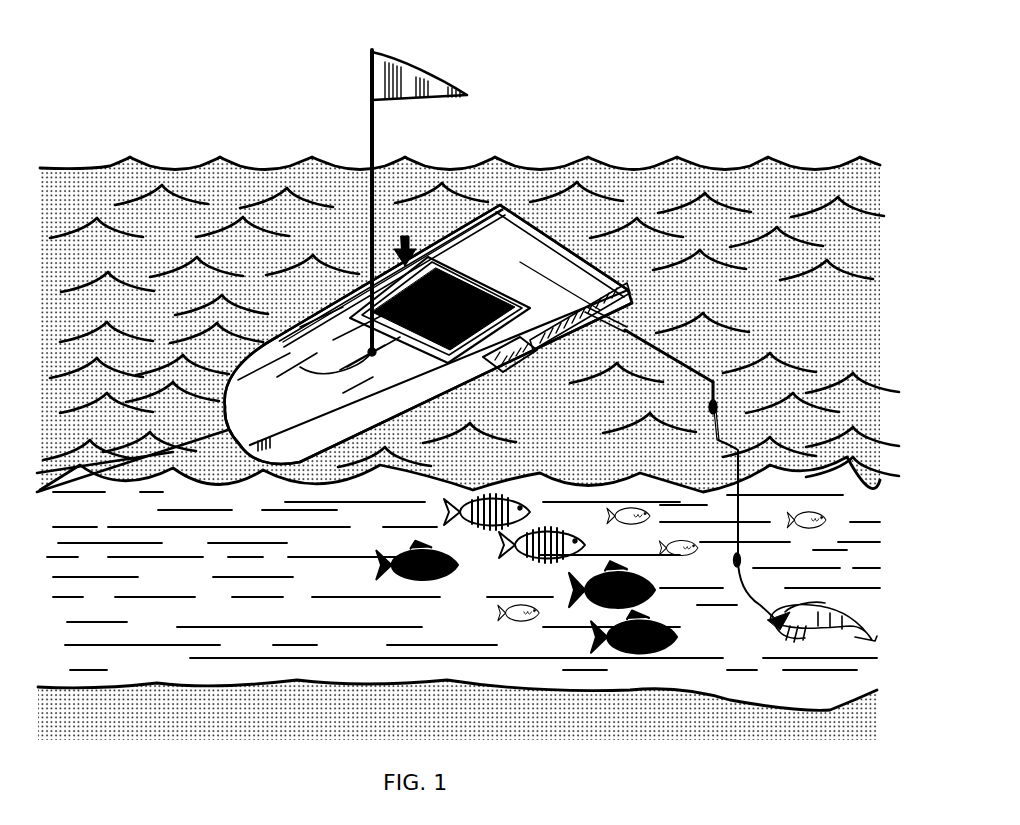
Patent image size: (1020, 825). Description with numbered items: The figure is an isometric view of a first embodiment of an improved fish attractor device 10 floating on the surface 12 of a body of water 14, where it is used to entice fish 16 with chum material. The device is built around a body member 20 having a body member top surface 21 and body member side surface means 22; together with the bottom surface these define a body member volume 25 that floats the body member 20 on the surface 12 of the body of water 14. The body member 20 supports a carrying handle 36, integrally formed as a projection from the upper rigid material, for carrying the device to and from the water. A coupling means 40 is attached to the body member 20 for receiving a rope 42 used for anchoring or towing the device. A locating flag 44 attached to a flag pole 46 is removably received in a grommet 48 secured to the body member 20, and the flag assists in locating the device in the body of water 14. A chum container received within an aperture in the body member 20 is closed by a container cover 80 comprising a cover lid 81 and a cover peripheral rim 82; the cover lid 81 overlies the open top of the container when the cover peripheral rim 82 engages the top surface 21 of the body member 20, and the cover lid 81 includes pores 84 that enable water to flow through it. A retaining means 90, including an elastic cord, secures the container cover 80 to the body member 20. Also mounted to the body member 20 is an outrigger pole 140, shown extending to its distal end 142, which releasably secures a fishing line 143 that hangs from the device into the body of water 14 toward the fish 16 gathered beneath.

The fish attractor device 10 is at (643, 153).
The surface 12 is at (717, 170).
The body of water 14 is at (787, 187).
The fish 16 is at (525, 610).
The body member 20 is at (588, 268).
The body member top surface 21 is at (503, 207).
The body member side surface means 22 is at (345, 468).
The body member volume 25 is at (570, 243).
The carrying handle 36 is at (543, 367).
The coupling means 40 is at (258, 419).
The rope 42 is at (143, 450).
The locating flag 44 is at (487, 45).
The flag pole 46 is at (368, 152).
The grommet 48 is at (428, 334).
The container cover 80 is at (465, 267).
The cover lid 81 is at (527, 243).
The cover peripheral rim 82 is at (522, 290).
The pores 84 is at (350, 412).
The retaining means 90 is at (360, 233).
The outrigger pole 140 is at (712, 381).
The distal end 142 is at (718, 386).
The fishing line 143 is at (738, 540).